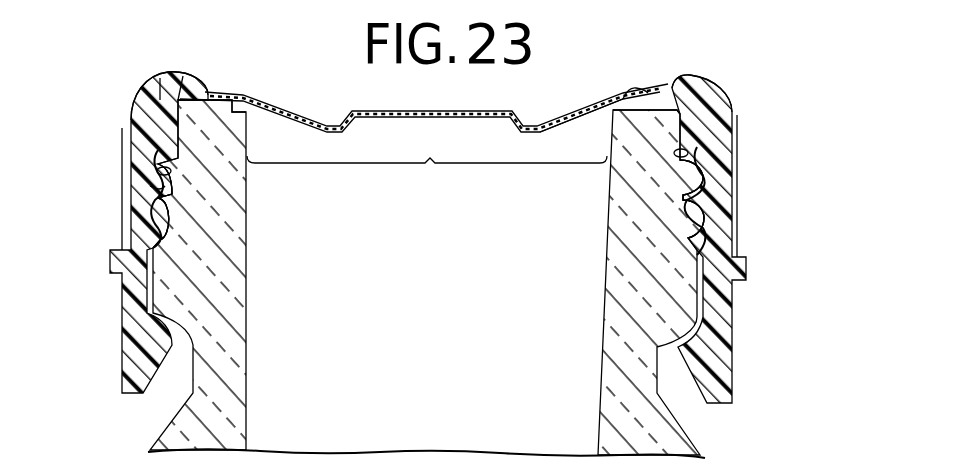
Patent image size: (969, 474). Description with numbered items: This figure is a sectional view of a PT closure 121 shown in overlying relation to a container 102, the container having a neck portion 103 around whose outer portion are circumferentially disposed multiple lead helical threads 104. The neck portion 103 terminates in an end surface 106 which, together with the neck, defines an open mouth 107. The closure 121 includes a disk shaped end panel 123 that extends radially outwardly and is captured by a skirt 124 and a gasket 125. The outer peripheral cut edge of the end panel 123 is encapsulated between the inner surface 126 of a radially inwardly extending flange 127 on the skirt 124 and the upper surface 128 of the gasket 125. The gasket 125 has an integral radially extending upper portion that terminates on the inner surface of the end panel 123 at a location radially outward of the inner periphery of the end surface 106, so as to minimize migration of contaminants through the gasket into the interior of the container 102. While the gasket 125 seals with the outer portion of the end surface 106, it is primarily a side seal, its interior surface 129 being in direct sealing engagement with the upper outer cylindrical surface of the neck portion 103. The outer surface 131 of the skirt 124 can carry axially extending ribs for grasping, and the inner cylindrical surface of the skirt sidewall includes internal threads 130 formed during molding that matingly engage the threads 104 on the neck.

The container 102 is at (150, 438).
The neck portion 103 is at (173, 143).
The multiple lead helical threads 104 is at (163, 224).
The end surface 106 is at (623, 106).
The open mouth 107 is at (427, 175).
The PT closure 121 is at (744, 84).
The end panel 123 is at (303, 117).
The skirt 124 is at (730, 100).
The gasket 125 is at (133, 101).
The inner surface 126 is at (165, 76).
The radially inwardly extending flange 127 is at (183, 74).
The upper surface 128 is at (673, 82).
The interior surface 129 is at (160, 171).
The internal threads 130 is at (143, 203).
The outer surface 131 is at (147, 186).